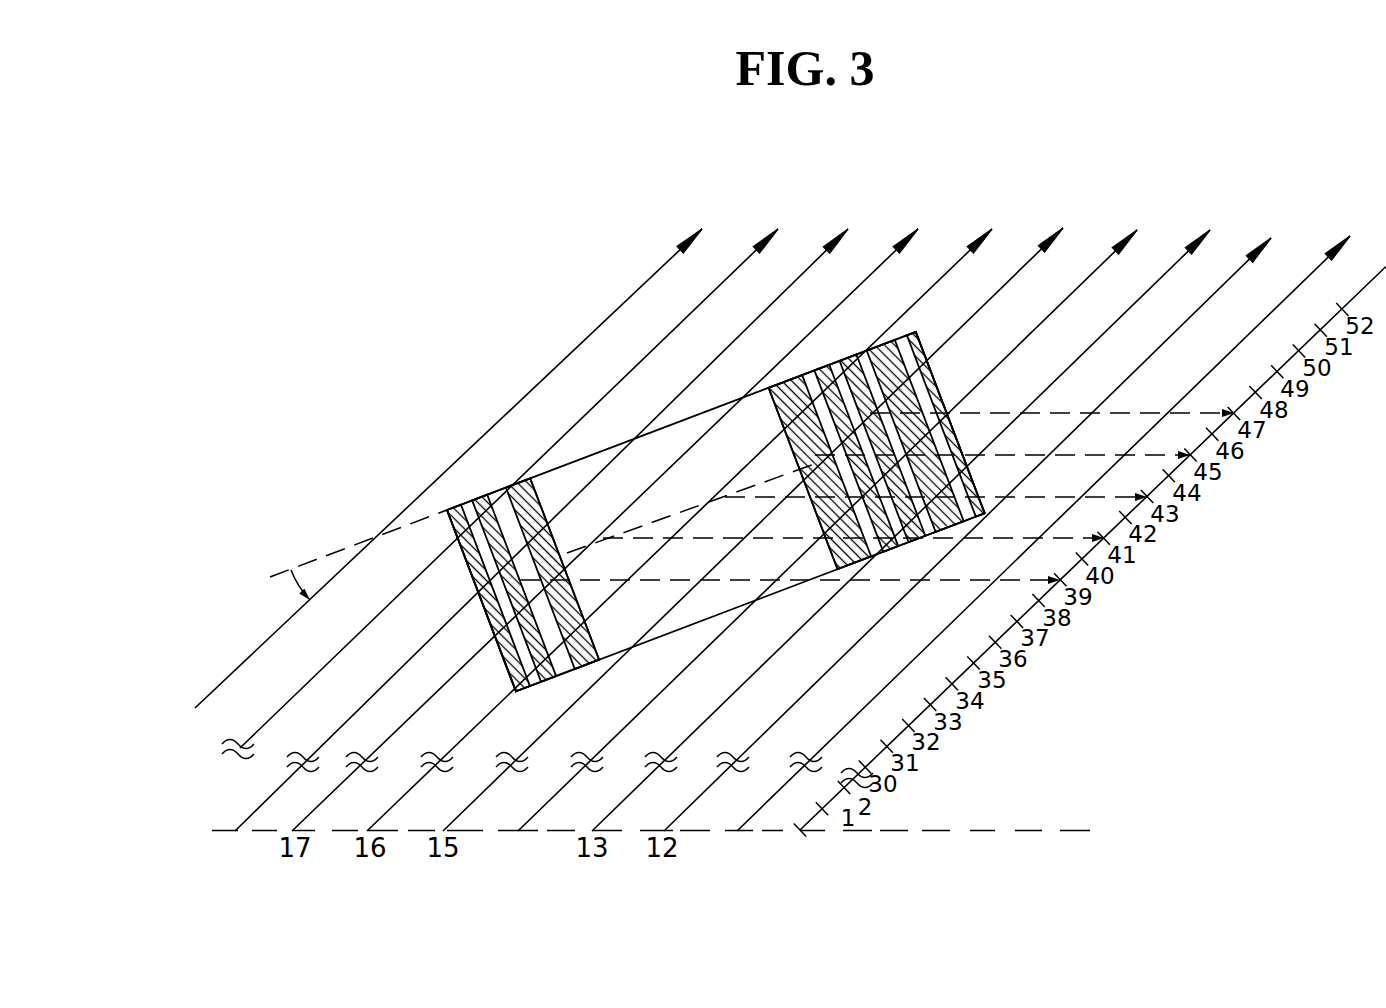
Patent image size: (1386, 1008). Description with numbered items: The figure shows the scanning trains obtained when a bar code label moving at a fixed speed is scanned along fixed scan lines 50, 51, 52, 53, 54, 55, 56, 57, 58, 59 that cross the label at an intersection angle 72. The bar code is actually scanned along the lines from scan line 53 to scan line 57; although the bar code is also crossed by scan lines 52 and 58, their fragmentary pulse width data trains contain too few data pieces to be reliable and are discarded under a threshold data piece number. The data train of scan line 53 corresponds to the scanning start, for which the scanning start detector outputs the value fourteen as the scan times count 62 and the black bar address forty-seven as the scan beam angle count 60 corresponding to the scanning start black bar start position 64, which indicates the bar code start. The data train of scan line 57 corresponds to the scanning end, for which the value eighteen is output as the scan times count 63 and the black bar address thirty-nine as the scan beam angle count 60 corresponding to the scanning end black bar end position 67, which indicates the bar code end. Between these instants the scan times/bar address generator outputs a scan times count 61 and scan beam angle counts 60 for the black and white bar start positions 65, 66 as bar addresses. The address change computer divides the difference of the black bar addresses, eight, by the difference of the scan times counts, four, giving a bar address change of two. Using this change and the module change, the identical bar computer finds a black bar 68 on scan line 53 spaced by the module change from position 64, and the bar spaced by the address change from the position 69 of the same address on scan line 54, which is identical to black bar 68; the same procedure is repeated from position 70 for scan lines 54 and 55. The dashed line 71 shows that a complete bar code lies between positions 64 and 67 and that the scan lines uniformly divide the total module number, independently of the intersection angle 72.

The scan line 50 is at (1351, 219).
The scan line 51 is at (1293, 219).
The scan line 52 is at (1211, 219).
The scan line 53 is at (1137, 219).
The scan line 54 is at (1069, 219).
The scan line 55 is at (992, 219).
The scan line 56 is at (920, 219).
The scan line 57 is at (856, 219).
The scan line 58 is at (782, 219).
The scan line 59 is at (706, 219).
The scan beam angle count 60 is at (803, 864).
The scan times count 61 is at (741, 864).
The scan times count at the scanning start 62 is at (523, 864).
The scan times count at the scanning end 63 is at (233, 864).
The scanning start black bar start position 64 is at (916, 413).
The black bar start position 65 is at (572, 570).
The white bar start position 66 is at (547, 603).
The scanning end black bar end position 67 is at (497, 590).
The black bar 68 is at (855, 565).
The position of the same address as the scanning start black bar start position 69 is at (870, 410).
The position 70 is at (828, 447).
The dashed line 71 is at (673, 512).
The intersection angle 72 is at (305, 577).